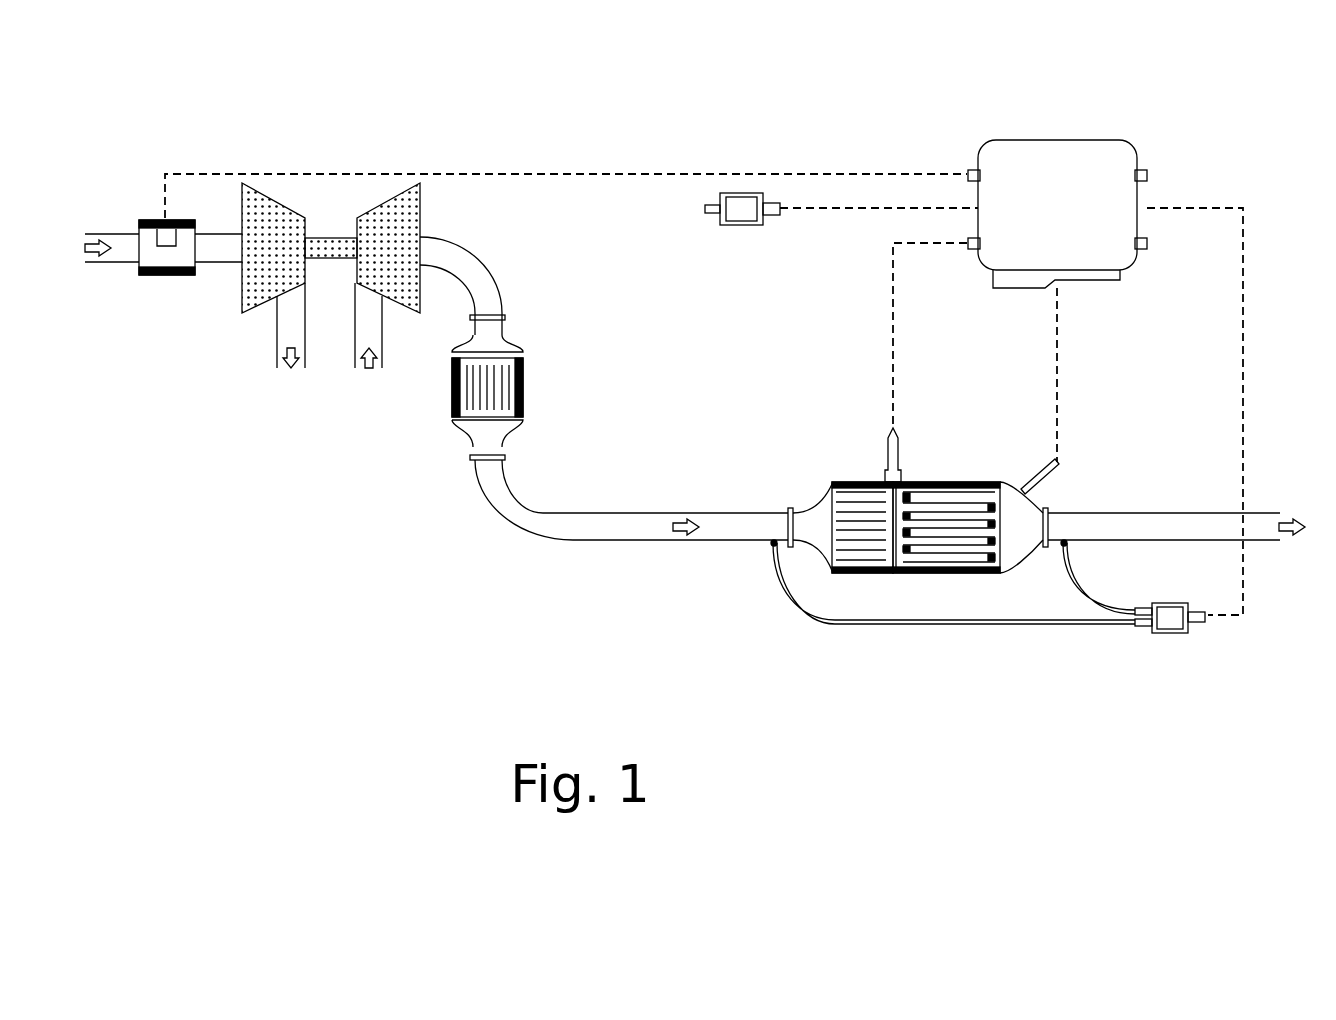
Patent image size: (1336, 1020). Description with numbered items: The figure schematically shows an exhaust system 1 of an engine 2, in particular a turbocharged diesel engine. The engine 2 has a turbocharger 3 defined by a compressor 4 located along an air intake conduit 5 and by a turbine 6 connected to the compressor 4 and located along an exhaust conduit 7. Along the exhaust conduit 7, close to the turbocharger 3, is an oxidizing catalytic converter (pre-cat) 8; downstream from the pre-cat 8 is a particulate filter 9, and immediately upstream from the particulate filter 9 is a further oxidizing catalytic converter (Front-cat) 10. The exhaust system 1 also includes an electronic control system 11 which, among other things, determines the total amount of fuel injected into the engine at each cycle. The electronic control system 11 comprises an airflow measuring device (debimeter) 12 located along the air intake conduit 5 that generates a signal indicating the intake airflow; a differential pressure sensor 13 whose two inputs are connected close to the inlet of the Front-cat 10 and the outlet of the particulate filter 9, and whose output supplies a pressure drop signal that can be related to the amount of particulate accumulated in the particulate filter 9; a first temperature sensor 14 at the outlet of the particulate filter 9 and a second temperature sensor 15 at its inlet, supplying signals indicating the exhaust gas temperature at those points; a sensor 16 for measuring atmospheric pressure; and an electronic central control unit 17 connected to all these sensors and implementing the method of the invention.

The exhaust system 1 is at (735, 143).
The engine 2 is at (150, 372).
The turbocharger 3 is at (347, 347).
The compressor 4 is at (265, 290).
The air intake conduit 5 is at (117, 240).
The turbine 6 is at (410, 213).
The exhaust conduit 7 is at (485, 280).
The oxidizing catalytic converter 8 is at (523, 377).
The particulate filter 9 is at (920, 530).
The further oxidizing catalytic converter 10 is at (850, 505).
The electronic control system 11 is at (1102, 170).
The airflow measuring device 12 is at (160, 256).
The differential pressure sensor 13 is at (1157, 622).
The first temperature sensor 14 is at (1040, 478).
The second temperature sensor 15 is at (900, 455).
The sensor 16 is at (737, 213).
The electronic central control unit 17 is at (1060, 165).